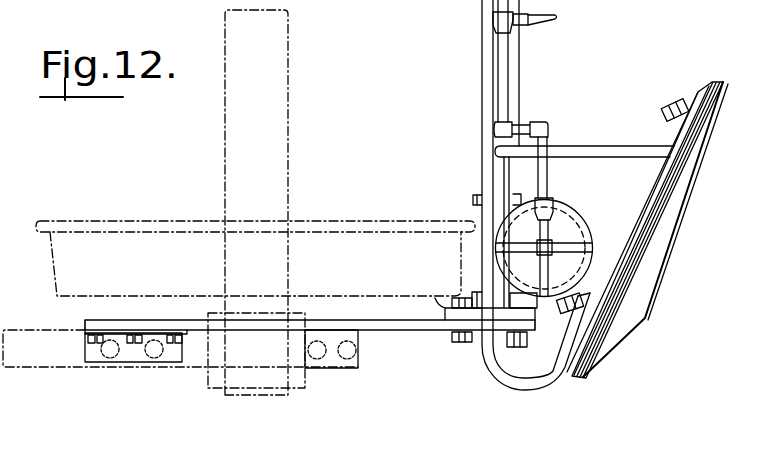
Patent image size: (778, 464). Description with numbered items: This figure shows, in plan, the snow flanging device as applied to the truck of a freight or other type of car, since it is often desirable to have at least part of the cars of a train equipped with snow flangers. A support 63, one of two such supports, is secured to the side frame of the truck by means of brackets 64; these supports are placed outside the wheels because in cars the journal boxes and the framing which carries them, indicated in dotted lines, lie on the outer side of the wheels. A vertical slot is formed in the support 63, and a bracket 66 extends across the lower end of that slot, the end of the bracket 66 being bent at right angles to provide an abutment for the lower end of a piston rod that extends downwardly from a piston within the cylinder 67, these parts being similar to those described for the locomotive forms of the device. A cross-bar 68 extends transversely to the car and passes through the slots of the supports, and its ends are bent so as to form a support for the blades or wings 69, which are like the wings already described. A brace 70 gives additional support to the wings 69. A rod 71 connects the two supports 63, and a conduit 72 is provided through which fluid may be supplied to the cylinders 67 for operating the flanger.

The support 63 is at (423, 328).
The bracket 64 is at (137, 358).
The bracket 66 is at (445, 313).
The cylinder 67 is at (576, 230).
The cross-bar 68 is at (481, 172).
The blades or wings 69 is at (652, 276).
The brace 70 is at (602, 146).
The rod 71 is at (521, 82).
The conduit 72 is at (548, 193).